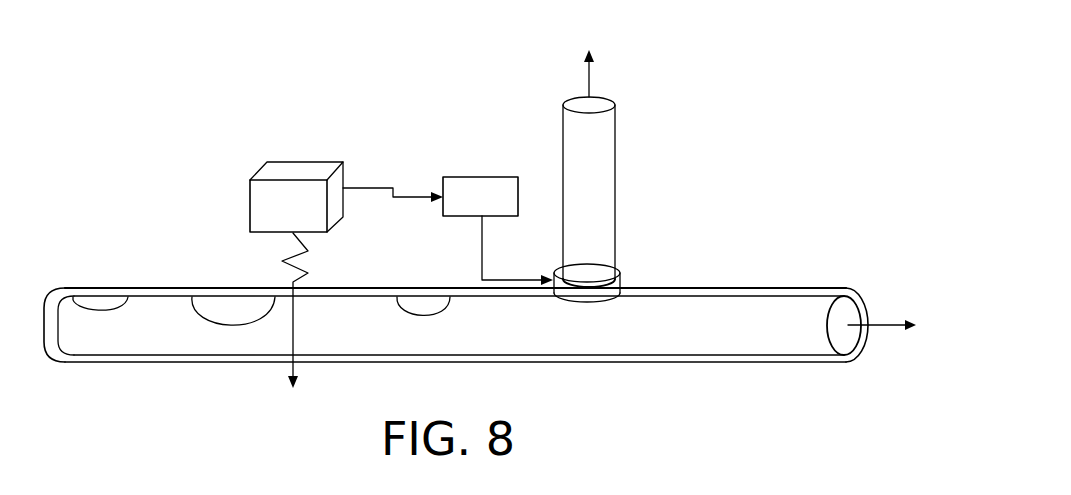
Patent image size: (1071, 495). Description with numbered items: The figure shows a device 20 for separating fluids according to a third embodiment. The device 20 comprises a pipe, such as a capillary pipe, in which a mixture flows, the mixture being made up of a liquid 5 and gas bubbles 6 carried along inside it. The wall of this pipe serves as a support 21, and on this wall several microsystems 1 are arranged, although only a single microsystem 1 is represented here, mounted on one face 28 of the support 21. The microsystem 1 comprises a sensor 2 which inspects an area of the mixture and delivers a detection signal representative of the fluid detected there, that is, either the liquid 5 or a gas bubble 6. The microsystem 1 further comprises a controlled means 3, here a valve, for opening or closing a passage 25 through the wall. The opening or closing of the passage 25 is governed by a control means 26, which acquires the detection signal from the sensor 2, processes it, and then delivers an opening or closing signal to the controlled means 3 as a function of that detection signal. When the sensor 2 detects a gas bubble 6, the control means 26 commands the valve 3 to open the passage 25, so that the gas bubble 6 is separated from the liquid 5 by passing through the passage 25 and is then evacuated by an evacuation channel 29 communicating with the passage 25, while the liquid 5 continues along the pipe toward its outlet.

The microsystem 1 is at (435, 108).
The sensor 2 is at (292, 195).
The controlled means 3 is at (621, 277).
The liquid 5 is at (177, 348).
The gas bubbles 6 is at (110, 302).
The device for separating fluids 20 is at (716, 129).
The support 21 is at (711, 287).
The passage 25 is at (570, 290).
The control means 26 is at (487, 193).
The face 28 is at (789, 285).
The evacuation channel 29 is at (600, 125).